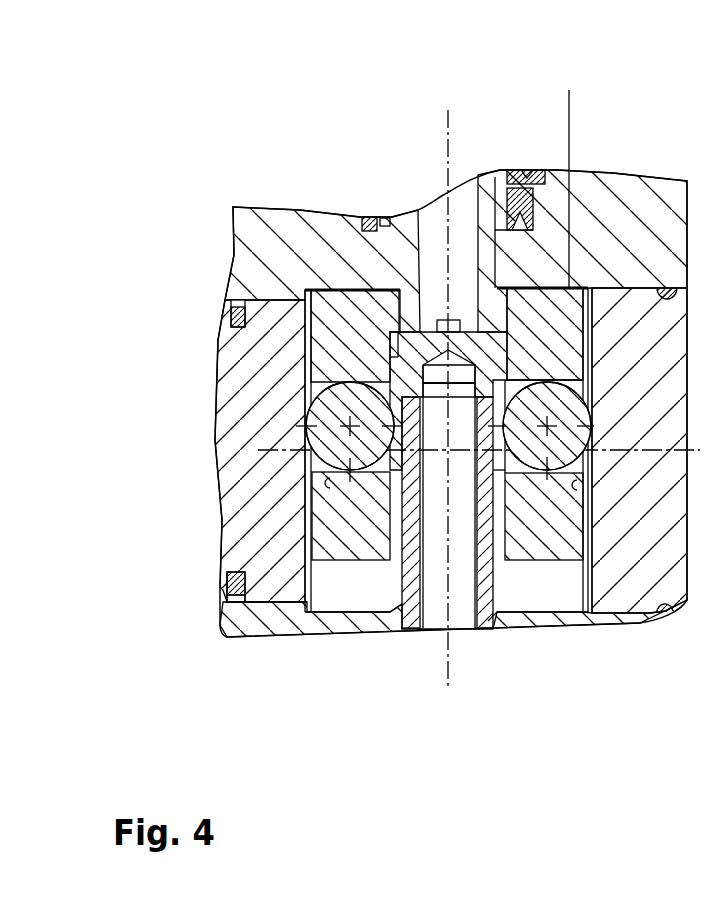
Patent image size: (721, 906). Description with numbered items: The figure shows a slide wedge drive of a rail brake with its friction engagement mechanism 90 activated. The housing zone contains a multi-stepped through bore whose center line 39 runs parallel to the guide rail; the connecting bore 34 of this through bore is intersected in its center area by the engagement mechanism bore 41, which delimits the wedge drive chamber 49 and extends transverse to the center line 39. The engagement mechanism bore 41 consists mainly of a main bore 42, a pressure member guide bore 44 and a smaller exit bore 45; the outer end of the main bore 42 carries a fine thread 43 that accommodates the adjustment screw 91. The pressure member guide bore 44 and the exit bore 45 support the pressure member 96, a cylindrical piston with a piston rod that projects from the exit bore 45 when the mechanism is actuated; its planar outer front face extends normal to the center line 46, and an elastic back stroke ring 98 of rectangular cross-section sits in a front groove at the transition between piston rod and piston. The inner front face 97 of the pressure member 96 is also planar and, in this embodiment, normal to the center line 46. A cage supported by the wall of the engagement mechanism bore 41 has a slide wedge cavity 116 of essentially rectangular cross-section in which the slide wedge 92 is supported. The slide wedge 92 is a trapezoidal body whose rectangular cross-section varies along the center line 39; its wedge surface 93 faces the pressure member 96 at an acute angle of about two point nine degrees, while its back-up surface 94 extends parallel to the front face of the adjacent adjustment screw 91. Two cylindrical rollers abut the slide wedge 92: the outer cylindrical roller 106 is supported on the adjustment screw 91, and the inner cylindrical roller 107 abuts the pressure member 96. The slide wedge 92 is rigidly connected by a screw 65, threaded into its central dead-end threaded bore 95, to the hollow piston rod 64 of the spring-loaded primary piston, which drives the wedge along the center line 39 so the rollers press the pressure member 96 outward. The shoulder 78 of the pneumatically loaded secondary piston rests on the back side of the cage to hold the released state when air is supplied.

The connecting bore 34 is at (390, 622).
The center line 39 is at (448, 162).
The engagement mechanism bore 41 is at (533, 628).
The main bore 42 is at (348, 612).
The fine thread 43 is at (628, 287).
The pressure member guide bore 44 is at (267, 603).
The exit bore 45 is at (225, 573).
The center line 46 is at (265, 450).
The wedge drive chamber 49 is at (337, 592).
The piston rod 64 is at (410, 592).
The screw 65 is at (458, 593).
The shoulder 78 is at (500, 240).
The friction engagement mechanism 90 is at (292, 433).
The adjustment screw 91 is at (625, 570).
The slide wedge 92 is at (377, 218).
The wedge surface 93 is at (398, 348).
The back-up surface 94 is at (569, 287).
The threaded bore 95 is at (423, 385).
The pressure member 96 is at (253, 490).
The inner front face 97 is at (302, 523).
The back stroke ring 98 is at (227, 583).
The outer cylindrical roller 106 is at (555, 442).
The inner cylindrical roller 107 is at (332, 417).
The slide wedge cavity 116 is at (415, 348).